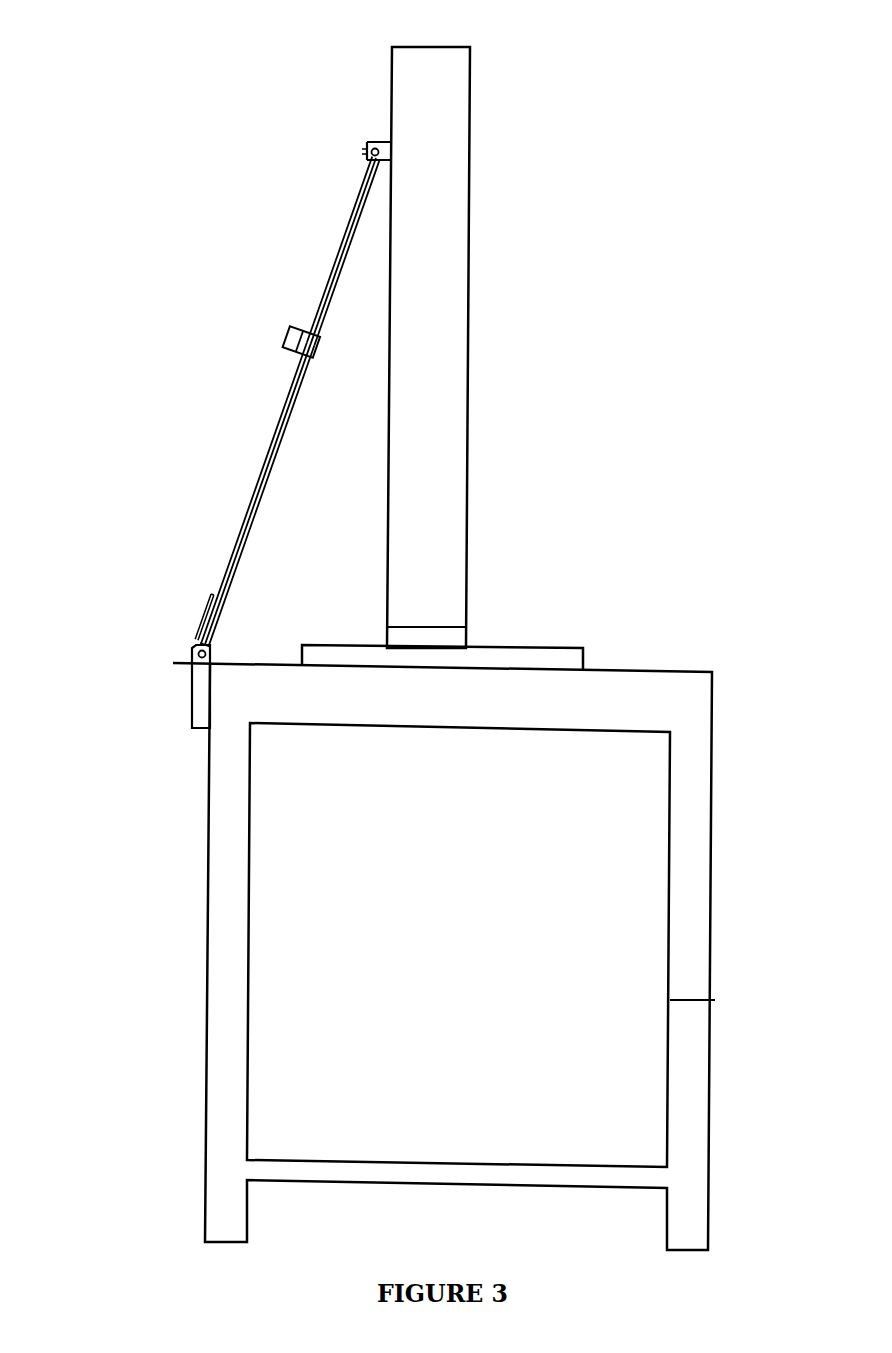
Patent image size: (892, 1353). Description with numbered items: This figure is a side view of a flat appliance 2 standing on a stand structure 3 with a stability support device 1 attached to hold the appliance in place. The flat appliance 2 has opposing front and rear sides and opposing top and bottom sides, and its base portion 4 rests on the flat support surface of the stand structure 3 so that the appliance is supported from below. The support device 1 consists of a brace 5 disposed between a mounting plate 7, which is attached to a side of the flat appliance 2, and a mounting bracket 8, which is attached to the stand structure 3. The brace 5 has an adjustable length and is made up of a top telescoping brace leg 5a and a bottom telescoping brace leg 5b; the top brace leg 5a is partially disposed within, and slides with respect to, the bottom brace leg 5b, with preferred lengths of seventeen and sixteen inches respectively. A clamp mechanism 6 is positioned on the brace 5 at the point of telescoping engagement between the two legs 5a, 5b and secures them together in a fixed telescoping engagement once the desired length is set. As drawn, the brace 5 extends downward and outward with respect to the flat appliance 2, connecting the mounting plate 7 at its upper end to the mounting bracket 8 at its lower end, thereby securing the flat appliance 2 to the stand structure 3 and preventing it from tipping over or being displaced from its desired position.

The support device 1 is at (148, 88).
The flat appliance 2 is at (472, 75).
The stand structure 3 is at (712, 793).
The base portion 4 is at (567, 646).
The brace 5 is at (255, 283).
The top telescoping brace leg 5a is at (343, 221).
The bottom telescoping brace leg 5b is at (250, 488).
The clamp mechanism 6 is at (312, 360).
The mounting plate 7 is at (373, 141).
The mounting bracket 8 is at (192, 703).